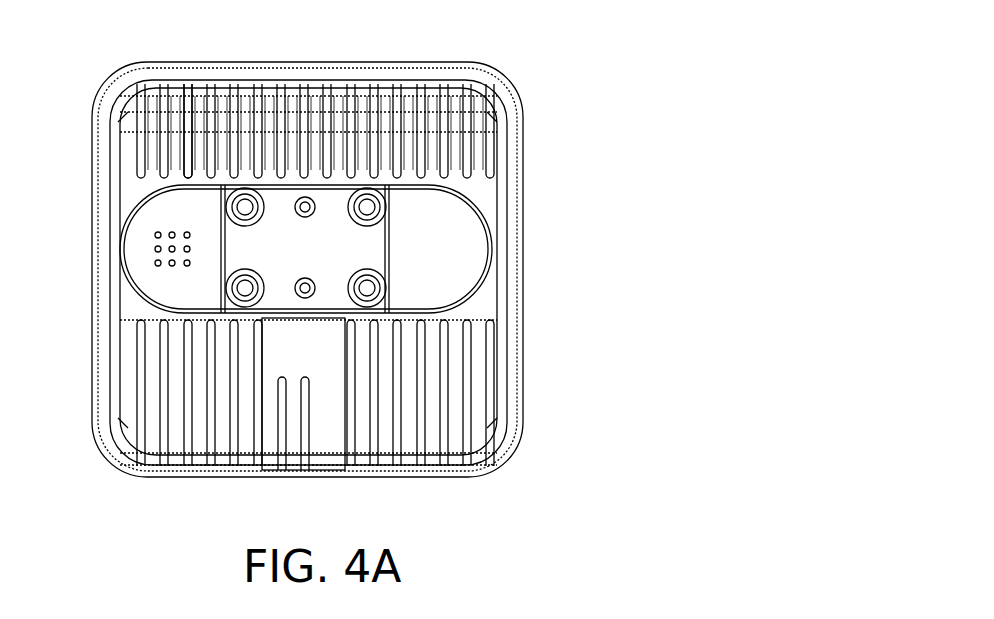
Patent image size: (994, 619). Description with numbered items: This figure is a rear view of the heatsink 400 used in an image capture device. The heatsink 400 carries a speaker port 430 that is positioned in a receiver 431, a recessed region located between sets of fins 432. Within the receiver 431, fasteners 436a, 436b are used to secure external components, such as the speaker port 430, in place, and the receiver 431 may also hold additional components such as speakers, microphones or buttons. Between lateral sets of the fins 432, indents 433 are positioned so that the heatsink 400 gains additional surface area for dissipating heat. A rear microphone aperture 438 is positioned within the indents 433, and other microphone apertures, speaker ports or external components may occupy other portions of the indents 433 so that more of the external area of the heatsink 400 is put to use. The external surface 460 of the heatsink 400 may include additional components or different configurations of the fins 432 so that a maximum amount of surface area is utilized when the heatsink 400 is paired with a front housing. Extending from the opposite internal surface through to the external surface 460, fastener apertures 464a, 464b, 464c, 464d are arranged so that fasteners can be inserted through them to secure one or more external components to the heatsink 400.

The heatsink 400 is at (333, 267).
The indents 433 is at (195, 108).
The rear microphone aperture 438 is at (200, 110).
The fastener 436a is at (309, 278).
The fastener 436b is at (298, 199).
The fastener aperture 464a is at (227, 208).
The fastener aperture 464b is at (227, 286).
The fastener aperture 464c is at (372, 212).
The fastener aperture 464d is at (375, 290).
The speaker port 430 is at (154, 248).
The receiver 431 is at (495, 235).
The fins 432 is at (428, 418).
The external surface 460 is at (305, 353).